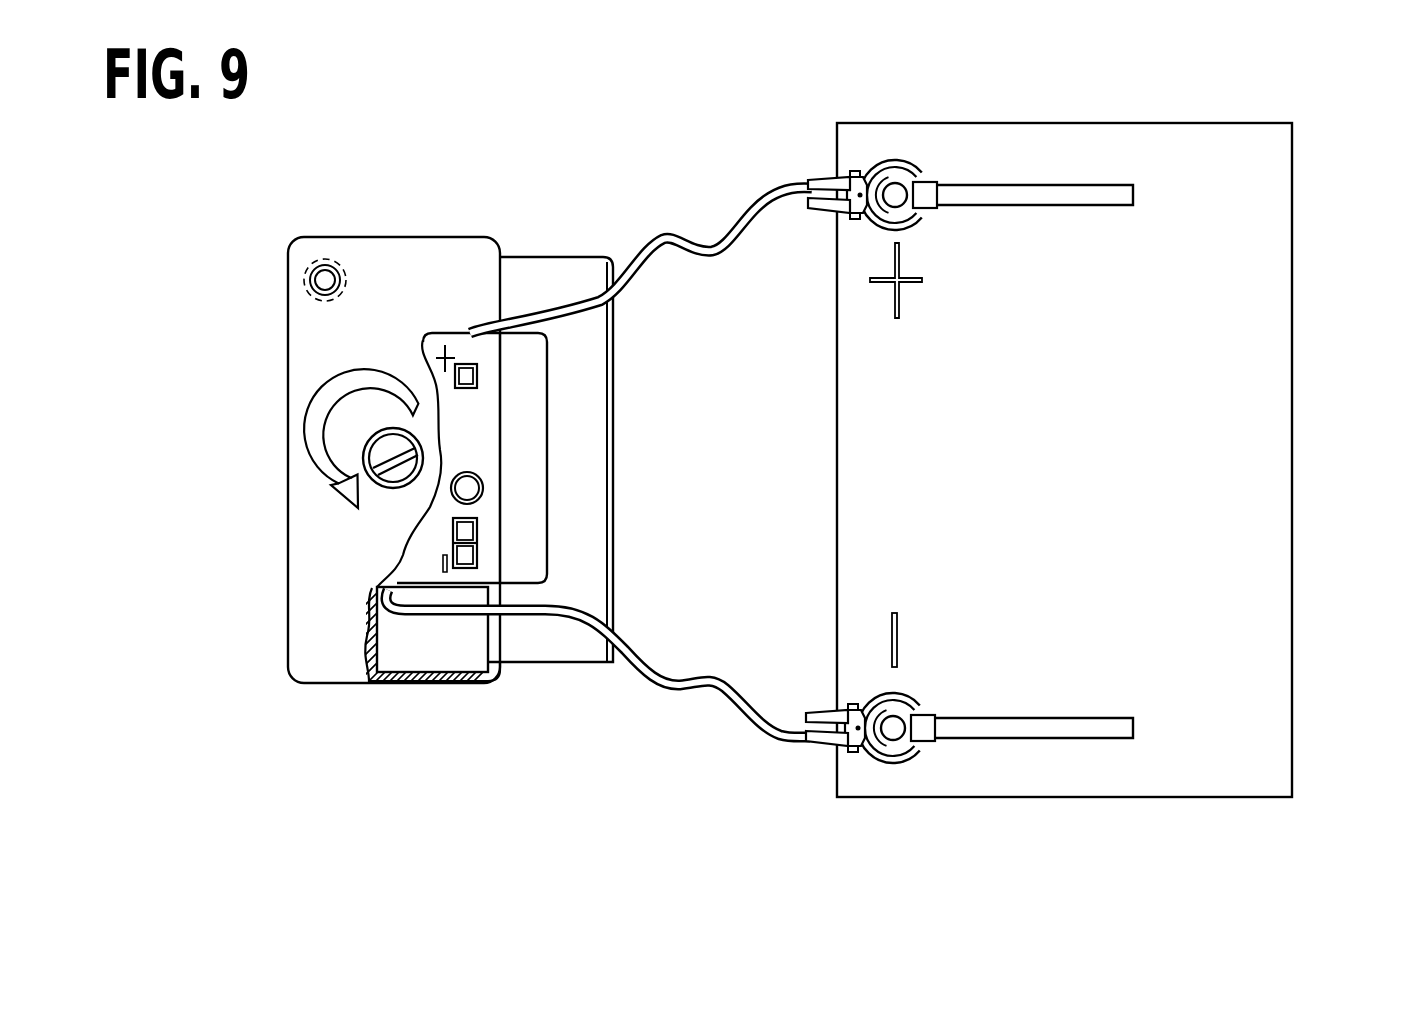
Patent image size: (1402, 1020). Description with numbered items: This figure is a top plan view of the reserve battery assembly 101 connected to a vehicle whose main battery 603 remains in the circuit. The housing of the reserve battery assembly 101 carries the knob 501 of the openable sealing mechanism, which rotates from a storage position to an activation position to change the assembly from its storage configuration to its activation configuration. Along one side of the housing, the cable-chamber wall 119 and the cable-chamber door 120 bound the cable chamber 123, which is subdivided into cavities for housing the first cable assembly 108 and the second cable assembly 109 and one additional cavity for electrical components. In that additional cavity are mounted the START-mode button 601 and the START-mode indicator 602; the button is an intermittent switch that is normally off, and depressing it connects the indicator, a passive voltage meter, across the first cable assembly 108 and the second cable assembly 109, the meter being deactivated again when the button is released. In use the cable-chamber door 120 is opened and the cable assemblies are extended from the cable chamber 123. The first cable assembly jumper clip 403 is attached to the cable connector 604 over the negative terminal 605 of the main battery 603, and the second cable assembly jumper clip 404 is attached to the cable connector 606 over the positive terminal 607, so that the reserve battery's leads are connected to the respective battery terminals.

The reserve battery assembly 101 is at (392, 236).
The cable-chamber door 120 is at (540, 278).
The cable-chamber wall 119 is at (485, 437).
The knob 501 is at (378, 432).
The START-mode indicator 602 is at (483, 490).
The START-mode button 601 is at (460, 571).
The cable chamber 123 is at (403, 662).
The first cable assembly 108 is at (723, 693).
The second cable assembly 109 is at (762, 195).
The main battery 603 is at (1138, 469).
The second cable assembly jumper clip 404 is at (828, 187).
The positive terminal 607 is at (893, 183).
The cable connector 606 is at (923, 197).
The first cable assembly jumper clip 403 is at (824, 745).
The negative terminal 605 is at (900, 742).
The cable connector 604 is at (923, 730).